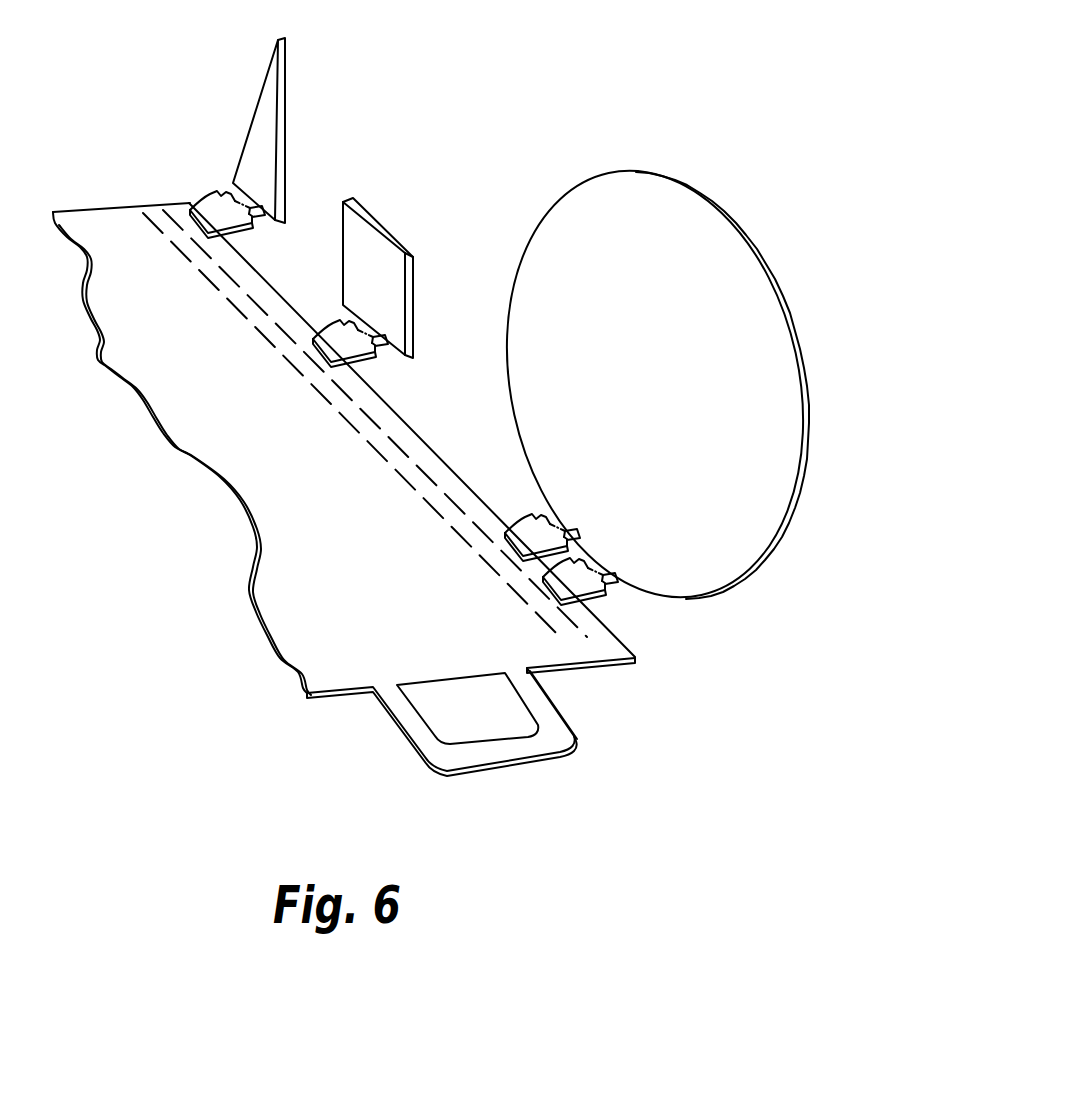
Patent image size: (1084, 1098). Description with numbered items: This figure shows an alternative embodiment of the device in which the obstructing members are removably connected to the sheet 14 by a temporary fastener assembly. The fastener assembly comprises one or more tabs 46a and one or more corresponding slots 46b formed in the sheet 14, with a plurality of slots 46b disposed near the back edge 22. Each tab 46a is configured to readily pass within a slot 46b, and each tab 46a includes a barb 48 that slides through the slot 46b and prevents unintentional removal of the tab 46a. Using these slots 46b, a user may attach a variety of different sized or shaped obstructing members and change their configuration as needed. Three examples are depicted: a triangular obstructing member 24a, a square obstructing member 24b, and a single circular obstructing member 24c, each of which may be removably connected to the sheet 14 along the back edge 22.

The sheet 14 is at (348, 508).
The back edge 22 is at (435, 404).
The triangular obstructing member 24a is at (317, 95).
The square obstructing member 24b is at (426, 214).
The circular obstructing member 24c is at (820, 308).
The tab 46a is at (207, 207).
The slot 46b is at (170, 283).
The barb 48 is at (256, 224).